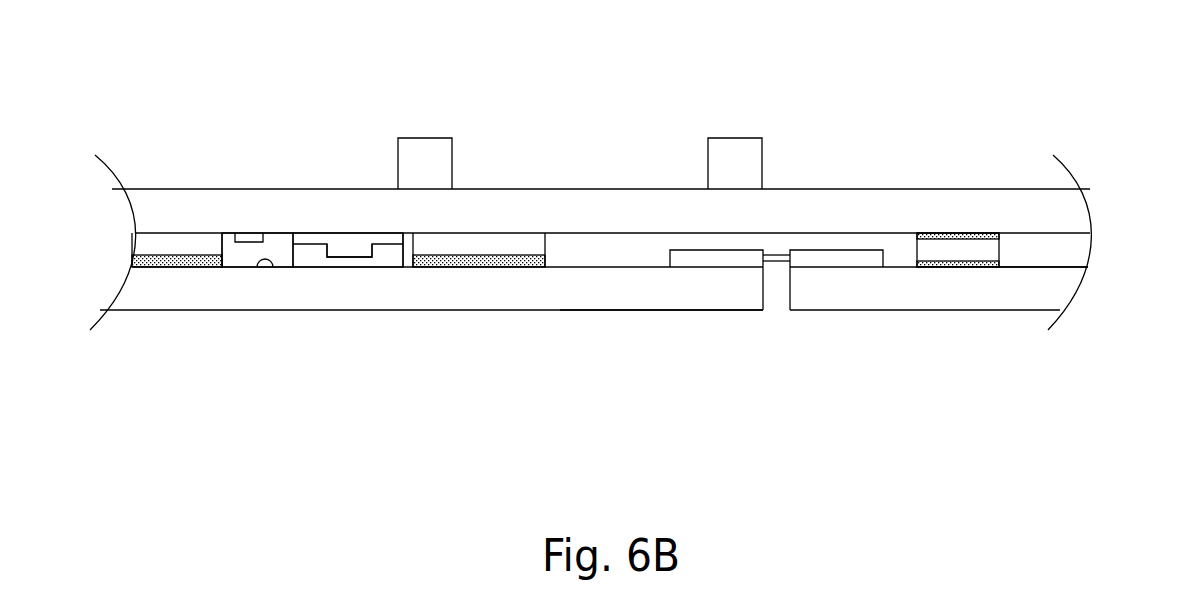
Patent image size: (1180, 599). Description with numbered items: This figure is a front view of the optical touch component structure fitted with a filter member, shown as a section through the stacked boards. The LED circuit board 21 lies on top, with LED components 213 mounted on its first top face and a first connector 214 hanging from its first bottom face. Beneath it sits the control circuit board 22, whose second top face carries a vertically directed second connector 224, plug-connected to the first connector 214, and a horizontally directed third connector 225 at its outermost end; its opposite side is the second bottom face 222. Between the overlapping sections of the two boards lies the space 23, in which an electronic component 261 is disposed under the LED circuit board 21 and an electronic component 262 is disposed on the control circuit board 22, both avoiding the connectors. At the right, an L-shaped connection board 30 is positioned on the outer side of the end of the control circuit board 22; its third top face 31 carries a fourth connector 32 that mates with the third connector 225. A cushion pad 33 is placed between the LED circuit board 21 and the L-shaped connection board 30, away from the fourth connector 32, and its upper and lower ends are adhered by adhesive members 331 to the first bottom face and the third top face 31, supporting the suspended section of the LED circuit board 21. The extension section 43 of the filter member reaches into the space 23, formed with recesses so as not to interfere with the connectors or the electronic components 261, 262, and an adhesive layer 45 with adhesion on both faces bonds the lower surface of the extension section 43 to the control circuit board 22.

The LED circuit board 21 is at (1013, 210).
The LED component 213 is at (733, 162).
The first connector 214 is at (343, 240).
The extension section 43 is at (155, 248).
The adhesive layer 45 is at (170, 267).
The electronic component 261 is at (252, 240).
The electronic component 262 is at (262, 268).
The second connector 224 is at (308, 255).
The space 23 is at (563, 272).
The control circuit board 22 is at (668, 280).
The second bottom face 222 is at (650, 311).
The third connector 225 is at (693, 257).
The fourth connector 32 is at (815, 260).
The L-shaped connection board 30 is at (840, 278).
The cushion pad 33 is at (968, 245).
The adhesive member 331 is at (938, 232).
The third top face 31 is at (1020, 265).